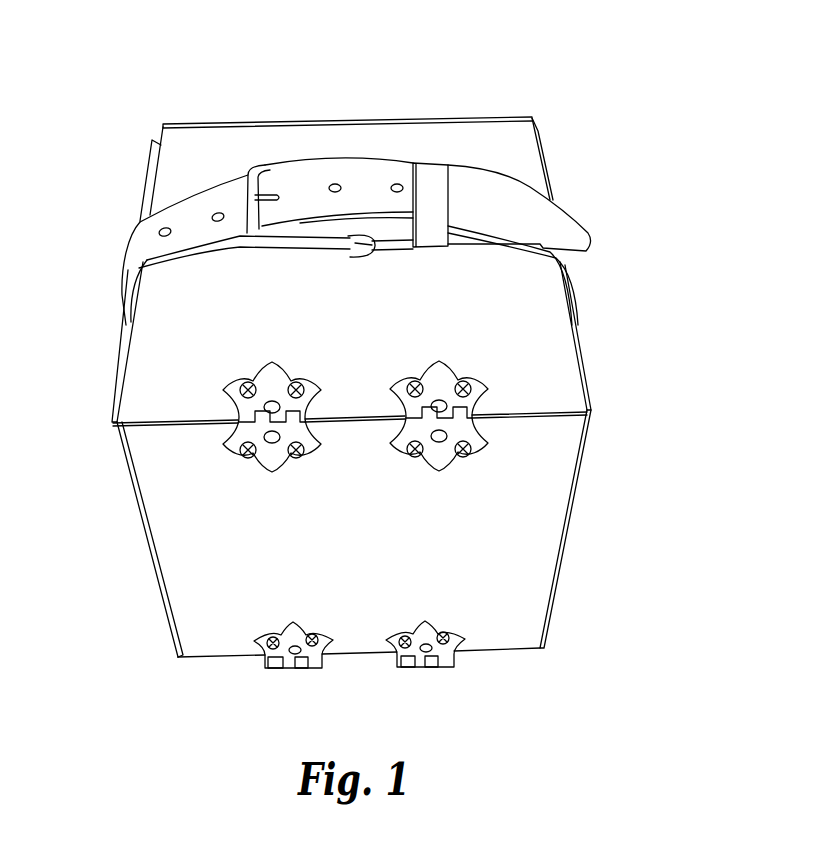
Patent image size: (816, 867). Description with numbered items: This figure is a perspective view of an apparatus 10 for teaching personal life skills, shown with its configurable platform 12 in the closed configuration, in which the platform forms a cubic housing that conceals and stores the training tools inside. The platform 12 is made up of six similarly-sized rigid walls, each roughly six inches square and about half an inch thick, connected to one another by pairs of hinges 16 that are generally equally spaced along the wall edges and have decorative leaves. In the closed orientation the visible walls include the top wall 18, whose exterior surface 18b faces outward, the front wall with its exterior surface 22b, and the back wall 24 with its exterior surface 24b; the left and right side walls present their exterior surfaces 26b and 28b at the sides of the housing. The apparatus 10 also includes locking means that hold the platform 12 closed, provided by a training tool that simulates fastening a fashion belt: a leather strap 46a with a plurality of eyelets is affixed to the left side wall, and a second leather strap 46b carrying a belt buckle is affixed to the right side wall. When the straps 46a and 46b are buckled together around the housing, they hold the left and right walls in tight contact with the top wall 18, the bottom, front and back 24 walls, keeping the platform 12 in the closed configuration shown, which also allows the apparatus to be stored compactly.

The apparatus for teaching personal life skills 10 is at (176, 34).
The configurable platform 12 is at (98, 393).
The hinge 16 is at (270, 452).
The top wall 18 is at (550, 352).
The exterior surface of top wall 18b is at (170, 323).
The exterior surface of front wall 22b is at (350, 123).
The back wall 24 is at (534, 531).
The exterior surface of back wall 24b is at (193, 548).
The exterior surface of left side wall 26b is at (146, 182).
The exterior surface of right side wall 28b is at (548, 172).
The leather strap 46a is at (138, 234).
The second leather strap 46b is at (556, 262).